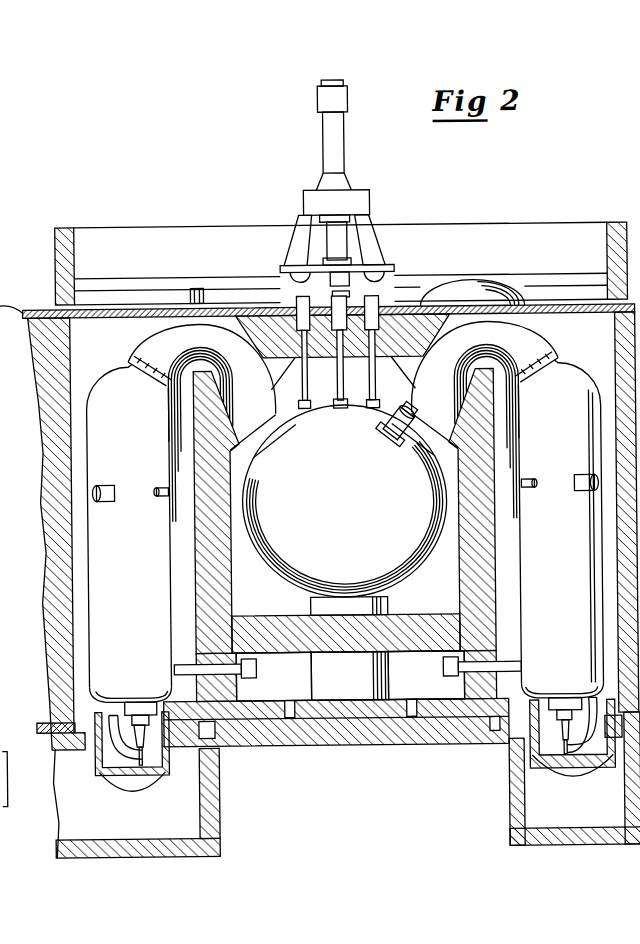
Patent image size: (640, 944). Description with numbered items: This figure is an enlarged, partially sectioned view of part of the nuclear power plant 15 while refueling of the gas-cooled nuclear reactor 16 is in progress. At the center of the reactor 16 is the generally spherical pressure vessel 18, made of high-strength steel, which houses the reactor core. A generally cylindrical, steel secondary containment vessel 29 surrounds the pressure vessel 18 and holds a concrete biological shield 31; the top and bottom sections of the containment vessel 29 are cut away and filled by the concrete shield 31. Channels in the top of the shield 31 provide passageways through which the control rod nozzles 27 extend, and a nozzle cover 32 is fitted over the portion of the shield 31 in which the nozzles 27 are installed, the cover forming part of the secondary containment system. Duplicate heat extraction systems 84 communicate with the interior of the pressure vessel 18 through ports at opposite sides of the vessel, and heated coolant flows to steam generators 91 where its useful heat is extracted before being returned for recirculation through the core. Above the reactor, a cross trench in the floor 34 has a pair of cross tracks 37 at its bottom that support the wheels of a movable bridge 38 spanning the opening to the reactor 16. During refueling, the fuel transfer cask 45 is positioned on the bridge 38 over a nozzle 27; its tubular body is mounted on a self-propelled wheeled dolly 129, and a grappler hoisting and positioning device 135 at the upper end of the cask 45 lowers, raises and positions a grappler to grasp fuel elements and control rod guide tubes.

The nuclear power plant 15 is at (537, 201).
The gas-cooled nuclear reactor 16 is at (272, 297).
The spherical pressure vessel 18 is at (346, 477).
The control rod nozzles 27 is at (344, 392).
The secondary containment vessel 29 is at (570, 315).
The concrete biological shield 31 is at (263, 304).
The nozzle cover 32 is at (468, 288).
The floor 34 is at (62, 226).
The cross tracks 37 is at (123, 277).
The movable bridge 38 is at (385, 243).
The fuel transfer cask 45 is at (353, 140).
The heat extraction systems 84 is at (129, 356).
The steam generators 91 is at (128, 531).
The self-propelled wheeled dolly 129 is at (372, 222).
The grappler hoisting and positioning device 135 is at (352, 94).